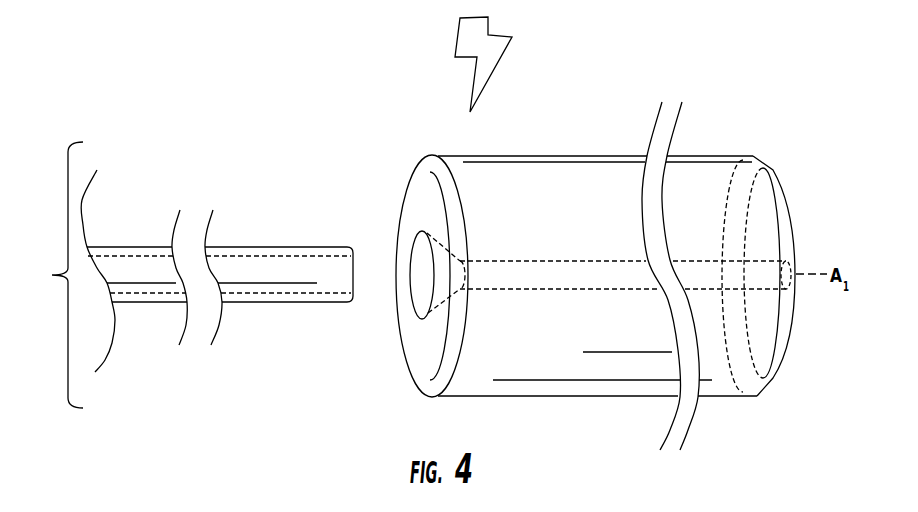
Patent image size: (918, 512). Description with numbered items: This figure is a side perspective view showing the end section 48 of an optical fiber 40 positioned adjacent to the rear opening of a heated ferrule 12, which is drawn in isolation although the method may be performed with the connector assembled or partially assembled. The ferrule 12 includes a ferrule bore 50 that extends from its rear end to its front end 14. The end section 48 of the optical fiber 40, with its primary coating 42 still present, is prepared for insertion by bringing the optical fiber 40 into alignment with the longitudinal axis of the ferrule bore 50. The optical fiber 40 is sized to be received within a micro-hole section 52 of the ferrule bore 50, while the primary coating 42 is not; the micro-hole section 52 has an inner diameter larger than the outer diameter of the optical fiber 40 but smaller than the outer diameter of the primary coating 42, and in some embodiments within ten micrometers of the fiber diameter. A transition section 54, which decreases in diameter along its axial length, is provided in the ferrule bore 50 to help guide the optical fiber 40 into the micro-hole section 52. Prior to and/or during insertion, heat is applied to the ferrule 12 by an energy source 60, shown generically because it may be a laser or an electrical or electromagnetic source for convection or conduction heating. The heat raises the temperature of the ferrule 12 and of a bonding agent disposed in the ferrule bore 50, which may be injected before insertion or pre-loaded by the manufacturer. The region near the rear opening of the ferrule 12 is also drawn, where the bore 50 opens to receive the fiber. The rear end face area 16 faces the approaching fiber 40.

The ferrule 12 is at (716, 152).
The front end 14 is at (788, 193).
The end face with bore opening 16 is at (404, 193).
The optical fiber 40 is at (300, 255).
The primary coating 42 is at (255, 247).
The end section 48 is at (345, 85).
The ferrule bore 50 is at (552, 261).
The micro-hole section 52 is at (593, 260).
The transition section 54 is at (440, 302).
The energy source 60 is at (503, 55).